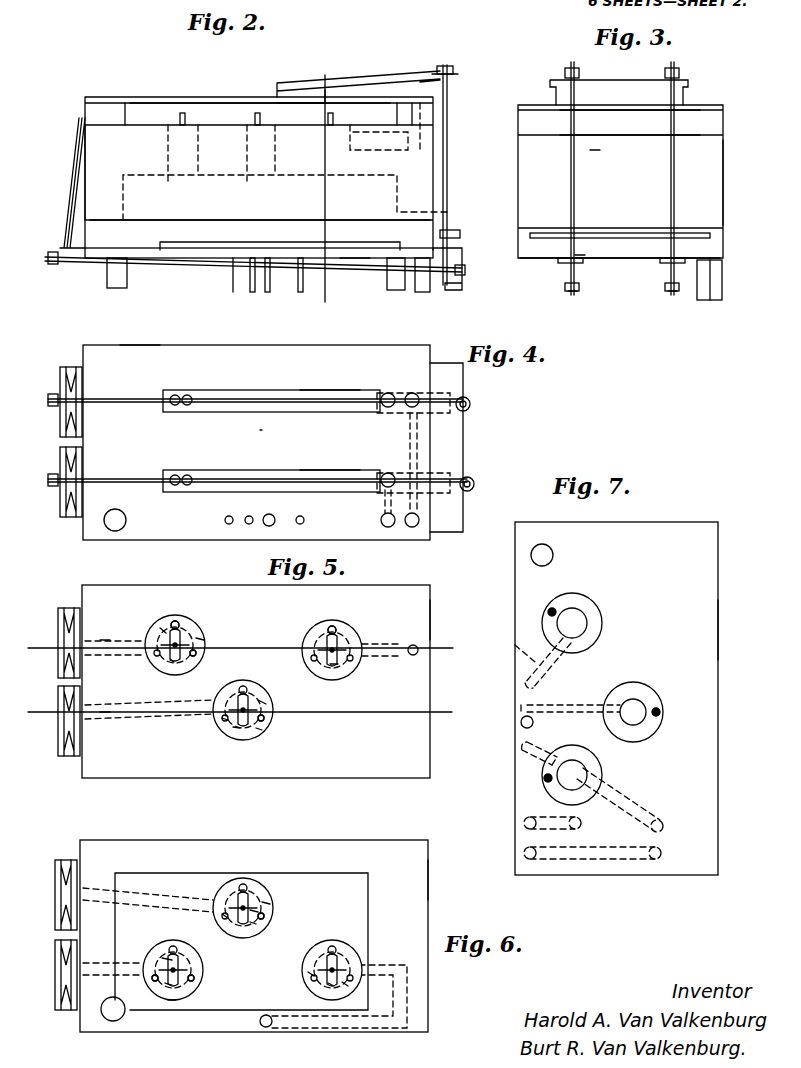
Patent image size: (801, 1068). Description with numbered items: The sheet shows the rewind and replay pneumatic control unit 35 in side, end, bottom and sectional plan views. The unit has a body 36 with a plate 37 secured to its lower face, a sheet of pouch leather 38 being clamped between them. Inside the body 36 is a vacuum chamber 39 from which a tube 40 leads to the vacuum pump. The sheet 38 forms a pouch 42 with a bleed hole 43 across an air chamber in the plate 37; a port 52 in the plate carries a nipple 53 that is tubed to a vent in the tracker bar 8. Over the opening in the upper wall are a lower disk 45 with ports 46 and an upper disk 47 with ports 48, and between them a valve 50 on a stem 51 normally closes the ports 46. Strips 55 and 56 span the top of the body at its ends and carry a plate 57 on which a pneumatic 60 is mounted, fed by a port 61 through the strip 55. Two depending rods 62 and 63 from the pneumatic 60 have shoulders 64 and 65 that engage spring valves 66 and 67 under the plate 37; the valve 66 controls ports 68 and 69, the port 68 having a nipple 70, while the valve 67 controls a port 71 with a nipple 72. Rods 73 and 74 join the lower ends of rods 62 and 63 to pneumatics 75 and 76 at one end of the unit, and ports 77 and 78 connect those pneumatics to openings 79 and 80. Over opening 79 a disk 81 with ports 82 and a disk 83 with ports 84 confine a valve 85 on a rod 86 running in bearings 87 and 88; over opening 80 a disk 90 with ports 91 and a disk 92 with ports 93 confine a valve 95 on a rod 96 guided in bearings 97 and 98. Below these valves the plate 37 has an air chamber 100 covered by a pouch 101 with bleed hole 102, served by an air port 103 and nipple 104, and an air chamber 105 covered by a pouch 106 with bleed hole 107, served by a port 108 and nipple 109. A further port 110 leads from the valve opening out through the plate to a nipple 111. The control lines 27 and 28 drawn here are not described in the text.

In FIG. 2, the tracker bar 8 is at (322, 303).
In FIG. 5, the upper control line 27 is at (240, 647).
In FIG. 5, the lower control line 28 is at (240, 712).
In FIG. 2, the rewind and replay pneumatic control unit 35 is at (221, 150).
In FIG. 3, the rewind and replay pneumatic control unit 35 is at (607, 171).
In FIG. 4, the rewind and replay pneumatic control unit 35 is at (271, 439).
In FIG. 2, the body 36 is at (105, 165).
In FIG. 3, the body 36 is at (715, 185).
In FIG. 5, the body 36 is at (415, 630).
In FIG. 6, the body 36 is at (414, 890).
In FIG. 2, the plate 37 is at (152, 250).
In FIG. 3, the plate 37 is at (715, 248).
In FIG. 4, the plate 37 is at (140, 345).
In FIG. 7, the plate 37 is at (708, 635).
In FIG. 2, the sheet of pouch leather 38 is at (372, 220).
In FIG. 7, the sheet of pouch leather 38 is at (655, 530).
In FIG. 2, the vacuum chamber 39 is at (449, 210).
In FIG. 6, the vacuum chamber 39 is at (241, 941).
In FIG. 2, the tube 40 is at (107, 268).
In FIG. 3, the tube 40 is at (722, 288).
In FIG. 6, the tube 40 is at (106, 1018).
In FIG. 7, the tube 40 is at (552, 552).
In FIG. 7, the pouch 42 is at (580, 772).
In FIG. 7, the bleed hole 43 is at (546, 782).
In FIG. 6, the disk 45 is at (318, 966).
In FIG. 6, the ports 46 is at (330, 985).
In FIG. 5, the disk 47 is at (318, 662).
In FIG. 5, the ports 48 is at (332, 625).
In FIG. 6, the valve 50 is at (310, 974).
In FIG. 2, the stem 51 is at (334, 118).
In FIG. 5, the stem 51 is at (334, 665).
In FIG. 6, the stem 51 is at (344, 985).
In FIG. 7, the port 52 is at (540, 752).
In FIG. 2, the nipple 53 is at (300, 292).
In FIG. 4, the nipple 53 is at (301, 516).
In FIG. 7, the nipple 53 is at (525, 748).
In FIG. 2, the strip 55 is at (425, 116).
In FIG. 3, the strip 55 is at (712, 125).
In FIG. 2, the strip 56 is at (103, 100).
In FIG. 2, the plate 57 is at (198, 100).
In FIG. 3, the plate 57 is at (708, 108).
In FIG. 2, the pneumatic 60 is at (358, 81).
In FIG. 3, the pneumatic 60 is at (619, 84).
In FIG. 2, the port 61 is at (420, 146).
In FIG. 5, the port 61 is at (410, 656).
In FIG. 2, the rod 62 is at (447, 176).
In FIG. 3, the rod 62 is at (575, 172).
In FIG. 4, the rod 62 is at (471, 403).
In FIG. 3, the rod 63 is at (675, 172).
In FIG. 4, the rod 63 is at (475, 486).
In FIG. 2, the shoulder 64 is at (455, 250).
In FIG. 3, the shoulder 64 is at (575, 258).
In FIG. 3, the shoulder 65 is at (700, 245).
In FIG. 2, the spring valve 66 is at (357, 258).
In FIG. 3, the spring valve 66 is at (560, 260).
In FIG. 4, the spring valve 66 is at (328, 390).
In FIG. 3, the spring valve 67 is at (665, 260).
In FIG. 4, the spring valve 67 is at (328, 470).
In FIG. 4, the port 68 is at (412, 393).
In FIG. 7, the port 68 is at (661, 853).
In FIG. 4, the port 69 is at (386, 393).
In FIG. 7, the port 69 is at (658, 818).
In FIG. 2, the nipple 70 is at (424, 292).
In FIG. 4, the nipple 70 is at (416, 525).
In FIG. 7, the nipple 70 is at (524, 853).
In FIG. 4, the port 71 is at (382, 500).
In FIG. 7, the port 71 is at (581, 823).
In FIG. 2, the nipple 72 is at (396, 290).
In FIG. 4, the nipple 72 is at (388, 527).
In FIG. 7, the nipple 72 is at (524, 823).
In FIG. 2, the rod 73 is at (185, 255).
In FIG. 3, the rod 73 is at (565, 288).
In FIG. 4, the rod 73 is at (140, 398).
In FIG. 3, the rod 74 is at (665, 288).
In FIG. 4, the rod 74 is at (135, 478).
In FIG. 2, the pneumatic 75 is at (70, 205).
In FIG. 4, the pneumatic 75 is at (60, 380).
In FIG. 5, the pneumatic 75 is at (60, 737).
In FIG. 6, the pneumatic 75 is at (57, 872).
In FIG. 4, the pneumatic 76 is at (60, 500).
In FIG. 5, the pneumatic 76 is at (60, 620).
In FIG. 6, the pneumatic 76 is at (57, 978).
In FIG. 5, the port 77 is at (102, 712).
In FIG. 6, the port 77 is at (172, 897).
In FIG. 5, the port 78 is at (100, 640).
In FIG. 6, the port 78 is at (126, 965).
In FIG. 2, the opening 79 is at (255, 189).
In FIG. 5, the opening 79 is at (270, 718).
In FIG. 6, the opening 79 is at (270, 904).
In FIG. 2, the opening 80 is at (179, 189).
In FIG. 5, the opening 80 is at (200, 625).
In FIG. 6, the opening 80 is at (205, 968).
In FIG. 6, the disk 81 is at (270, 922).
In FIG. 6, the ports 82 is at (244, 880).
In FIG. 5, the disk 83 is at (236, 730).
In FIG. 5, the ports 84 is at (244, 685).
In FIG. 5, the valve 85 is at (258, 732).
In FIG. 6, the valve 85 is at (254, 925).
In FIG. 2, the rod 86 is at (255, 118).
In FIG. 5, the rod 86 is at (265, 700).
In FIG. 6, the rod 86 is at (225, 918).
In FIG. 6, the bearing 87 is at (258, 912).
In FIG. 5, the bearing 88 is at (222, 720).
In FIG. 6, the disk 90 is at (172, 1000).
In FIG. 6, the ports 91 is at (155, 978).
In FIG. 5, the disk 92 is at (202, 640).
In FIG. 5, the ports 93 is at (193, 655).
In FIG. 5, the valve 95 is at (165, 630).
In FIG. 6, the valve 95 is at (195, 978).
In FIG. 2, the rod 96 is at (185, 118).
In FIG. 5, the rod 96 is at (172, 660).
In FIG. 6, the rod 96 is at (166, 958).
In FIG. 6, the bearing 97 is at (168, 985).
In FIG. 5, the bearing 98 is at (175, 622).
In FIG. 7, the air chamber 100 is at (660, 722).
In FIG. 7, the pouch 101 is at (640, 705).
In FIG. 7, the bleed hole 102 is at (662, 710).
In FIG. 7, the air port 103 is at (577, 700).
In FIG. 2, the nipple 104 is at (252, 292).
In FIG. 4, the nipple 104 is at (249, 516).
In FIG. 7, the air chamber 105 is at (604, 623).
In FIG. 7, the pouch 106 is at (590, 610).
In FIG. 7, the bleed hole 107 is at (551, 608).
In FIG. 7, the port 108 is at (515, 645).
In FIG. 2, the nipple 109 is at (235, 292).
In FIG. 4, the nipple 109 is at (229, 516).
In FIG. 6, the port 110 is at (346, 1030).
In FIG. 7, the port 110 is at (521, 722).
In FIG. 2, the nipple 111 is at (268, 292).
In FIG. 4, the nipple 111 is at (278, 508).